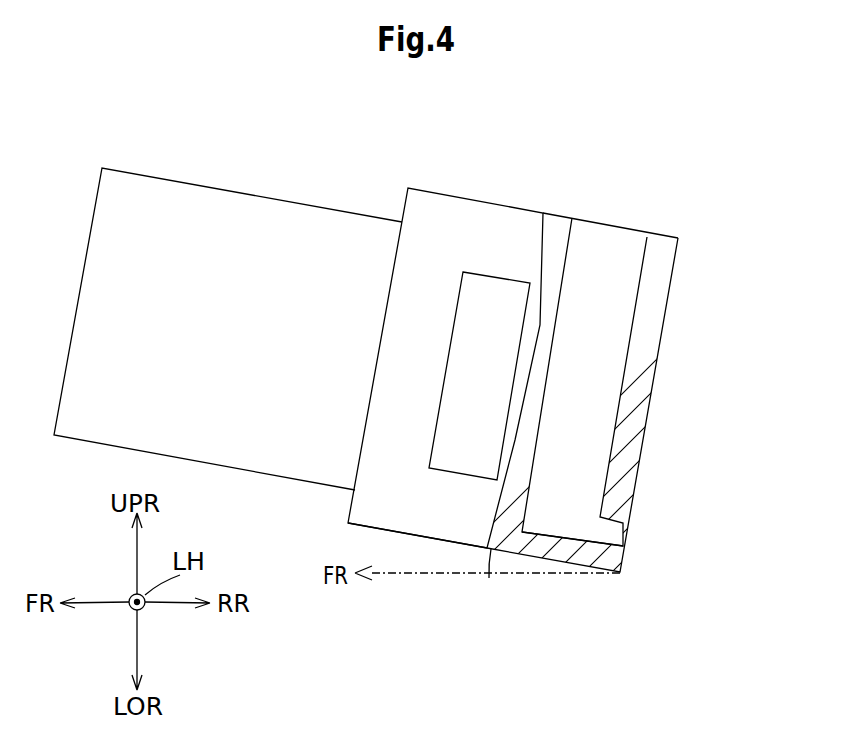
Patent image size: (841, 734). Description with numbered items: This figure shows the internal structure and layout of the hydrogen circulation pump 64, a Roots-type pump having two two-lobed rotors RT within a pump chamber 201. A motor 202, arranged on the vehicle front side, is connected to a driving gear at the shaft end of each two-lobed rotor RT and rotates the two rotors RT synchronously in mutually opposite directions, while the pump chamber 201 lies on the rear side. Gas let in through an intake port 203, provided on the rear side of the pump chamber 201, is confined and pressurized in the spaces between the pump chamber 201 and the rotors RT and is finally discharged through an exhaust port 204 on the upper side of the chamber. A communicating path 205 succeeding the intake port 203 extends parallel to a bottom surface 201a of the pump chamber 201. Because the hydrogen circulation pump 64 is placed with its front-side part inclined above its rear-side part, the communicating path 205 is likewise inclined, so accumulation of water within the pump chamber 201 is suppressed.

The hydrogen circulation pump 64 is at (598, 148).
The pump chamber 201 is at (422, 188).
The bottom surface of the pump chamber 201a is at (418, 540).
The motor 202 is at (227, 190).
The intake port 203 is at (622, 538).
The exhaust port 204 is at (612, 223).
The communicating path 205 is at (572, 540).
The two-lobed rotor RT is at (492, 288).